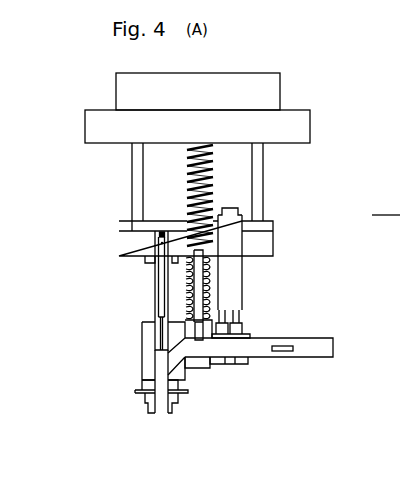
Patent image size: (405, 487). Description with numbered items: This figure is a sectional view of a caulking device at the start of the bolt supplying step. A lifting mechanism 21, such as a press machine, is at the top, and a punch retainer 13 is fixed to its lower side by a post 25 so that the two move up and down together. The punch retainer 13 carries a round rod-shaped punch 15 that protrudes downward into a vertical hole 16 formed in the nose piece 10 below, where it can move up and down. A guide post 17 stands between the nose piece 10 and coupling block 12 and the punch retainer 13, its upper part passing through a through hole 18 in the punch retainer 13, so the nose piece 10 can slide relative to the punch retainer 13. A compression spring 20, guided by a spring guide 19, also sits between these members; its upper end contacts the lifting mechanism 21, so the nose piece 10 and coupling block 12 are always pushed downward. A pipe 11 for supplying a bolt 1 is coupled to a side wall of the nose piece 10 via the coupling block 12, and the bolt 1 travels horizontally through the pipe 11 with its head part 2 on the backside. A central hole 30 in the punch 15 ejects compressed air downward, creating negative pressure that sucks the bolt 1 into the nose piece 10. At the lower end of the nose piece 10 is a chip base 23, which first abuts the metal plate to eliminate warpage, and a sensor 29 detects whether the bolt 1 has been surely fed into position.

The bolt 1 is at (283, 358).
The head part 2 is at (293, 347).
The nose piece 10 is at (143, 360).
The pipe 11 is at (260, 358).
The coupling block 12 is at (202, 362).
The punch retainer 13 is at (125, 242).
The punch 15 is at (155, 293).
The vertical hole 16 is at (152, 335).
The guide post 17 is at (242, 300).
The through hole 18 is at (242, 245).
The spring guide 19 is at (203, 276).
The compression spring 20 is at (213, 162).
The lifting mechanism 21 is at (311, 124).
The chip base 23 is at (144, 402).
The post 25 is at (132, 157).
The sensor 29 is at (137, 391).
The central hole 30 is at (157, 270).